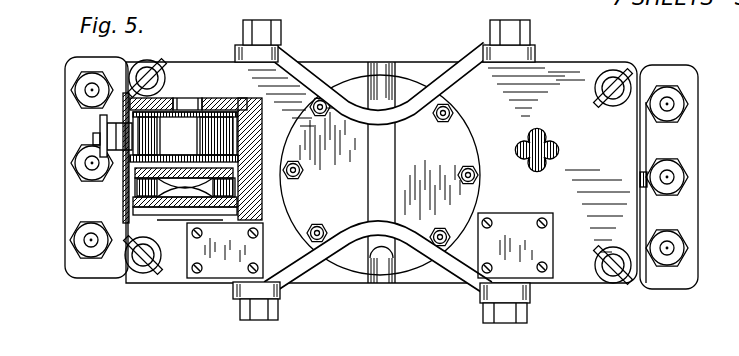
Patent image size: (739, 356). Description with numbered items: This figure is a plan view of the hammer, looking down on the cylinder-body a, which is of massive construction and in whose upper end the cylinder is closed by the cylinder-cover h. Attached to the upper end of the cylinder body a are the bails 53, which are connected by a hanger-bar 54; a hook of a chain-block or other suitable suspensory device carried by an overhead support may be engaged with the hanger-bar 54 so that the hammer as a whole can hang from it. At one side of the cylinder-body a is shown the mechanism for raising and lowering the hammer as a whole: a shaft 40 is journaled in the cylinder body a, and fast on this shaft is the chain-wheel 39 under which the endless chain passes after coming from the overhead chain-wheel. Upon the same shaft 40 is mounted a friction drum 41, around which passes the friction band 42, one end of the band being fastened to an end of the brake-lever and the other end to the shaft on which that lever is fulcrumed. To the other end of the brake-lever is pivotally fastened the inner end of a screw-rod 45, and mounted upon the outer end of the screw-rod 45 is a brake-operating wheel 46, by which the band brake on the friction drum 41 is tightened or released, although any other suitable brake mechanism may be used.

The chain-wheel 39 is at (182, 182).
The shaft 40 is at (187, 98).
The friction drum 41 is at (135, 165).
The friction band 42 is at (184, 137).
The screw-rod 45 is at (130, 126).
The brake-operating wheel 46 is at (96, 136).
The bails 53 is at (439, 72).
The hanger-bar 54 is at (373, 187).
The cylinder-body a is at (381, 172).
The cylinder-cover h is at (380, 175).